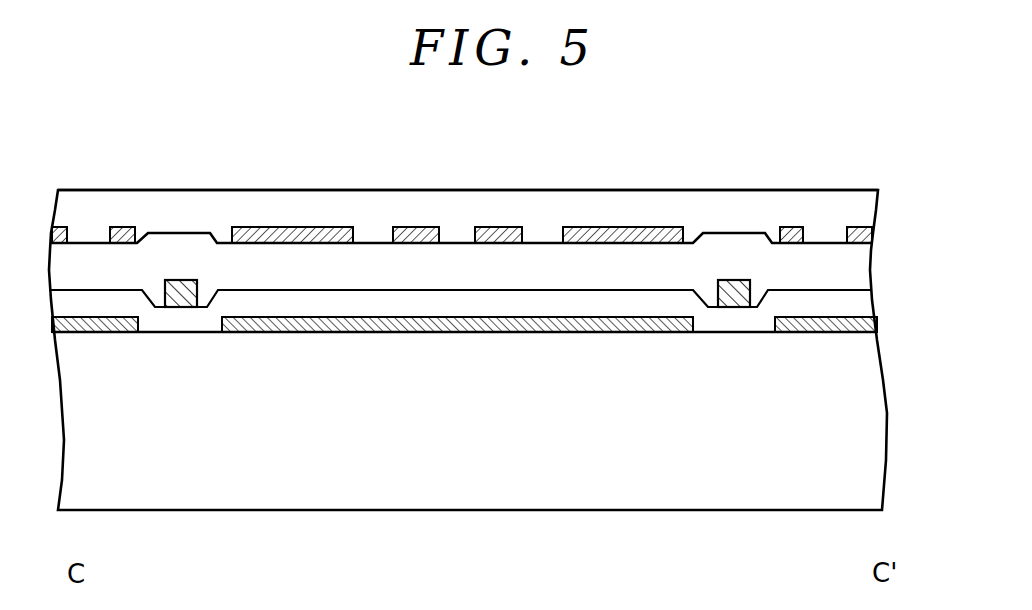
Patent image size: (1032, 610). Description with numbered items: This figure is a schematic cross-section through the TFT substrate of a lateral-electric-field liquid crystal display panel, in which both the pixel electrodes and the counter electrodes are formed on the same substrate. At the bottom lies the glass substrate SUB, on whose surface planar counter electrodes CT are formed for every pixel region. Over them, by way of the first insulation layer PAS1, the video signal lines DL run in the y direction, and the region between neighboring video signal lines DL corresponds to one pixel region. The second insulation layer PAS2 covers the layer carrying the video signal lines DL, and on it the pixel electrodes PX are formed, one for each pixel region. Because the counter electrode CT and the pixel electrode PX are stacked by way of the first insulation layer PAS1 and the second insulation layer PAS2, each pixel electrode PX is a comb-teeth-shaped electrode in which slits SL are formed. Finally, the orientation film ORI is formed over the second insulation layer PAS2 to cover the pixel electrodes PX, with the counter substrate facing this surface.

The glass substrate SUB is at (530, 478).
The counter electrode CT is at (390, 333).
The video signal line DL is at (180, 296).
The first insulation layer PAS1 is at (535, 303).
The second insulation layer PAS2 is at (742, 240).
The pixel electrode PX is at (124, 227).
The slit SL is at (370, 232).
The orientation film ORI is at (184, 212).